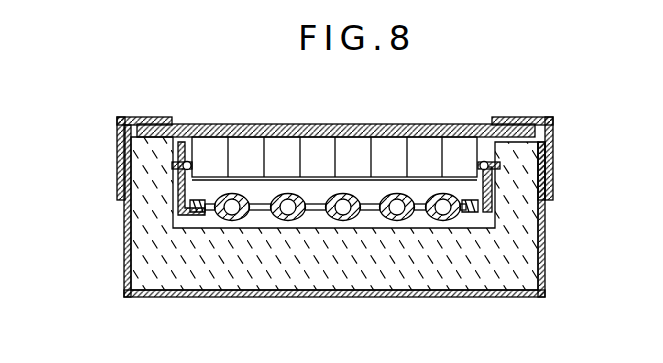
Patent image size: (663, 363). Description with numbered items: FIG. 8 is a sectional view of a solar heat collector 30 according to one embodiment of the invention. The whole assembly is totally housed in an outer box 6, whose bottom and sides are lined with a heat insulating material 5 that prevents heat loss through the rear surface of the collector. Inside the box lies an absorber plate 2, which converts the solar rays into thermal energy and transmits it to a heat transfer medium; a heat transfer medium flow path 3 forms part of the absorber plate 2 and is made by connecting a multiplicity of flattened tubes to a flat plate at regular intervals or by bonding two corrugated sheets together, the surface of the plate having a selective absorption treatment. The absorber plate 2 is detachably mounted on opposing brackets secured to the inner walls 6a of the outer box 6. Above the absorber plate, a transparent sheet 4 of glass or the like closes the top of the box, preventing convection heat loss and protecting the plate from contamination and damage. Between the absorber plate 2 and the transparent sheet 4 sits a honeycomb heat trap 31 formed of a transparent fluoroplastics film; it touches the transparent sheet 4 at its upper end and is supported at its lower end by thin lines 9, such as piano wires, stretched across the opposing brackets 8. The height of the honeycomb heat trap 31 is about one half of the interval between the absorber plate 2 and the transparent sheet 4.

The absorber plate 2 is at (262, 213).
The heat transfer medium flow path 3 is at (340, 208).
The transparent sheet 4 is at (363, 124).
The heat insulating material 5 is at (398, 270).
The outer box 6 is at (205, 296).
The inner walls 6a is at (493, 153).
The brackets 8 is at (497, 208).
The thin lines 9 is at (493, 183).
The solar heat collector 30 is at (118, 249).
The honeycomb heat trap 31 is at (426, 150).